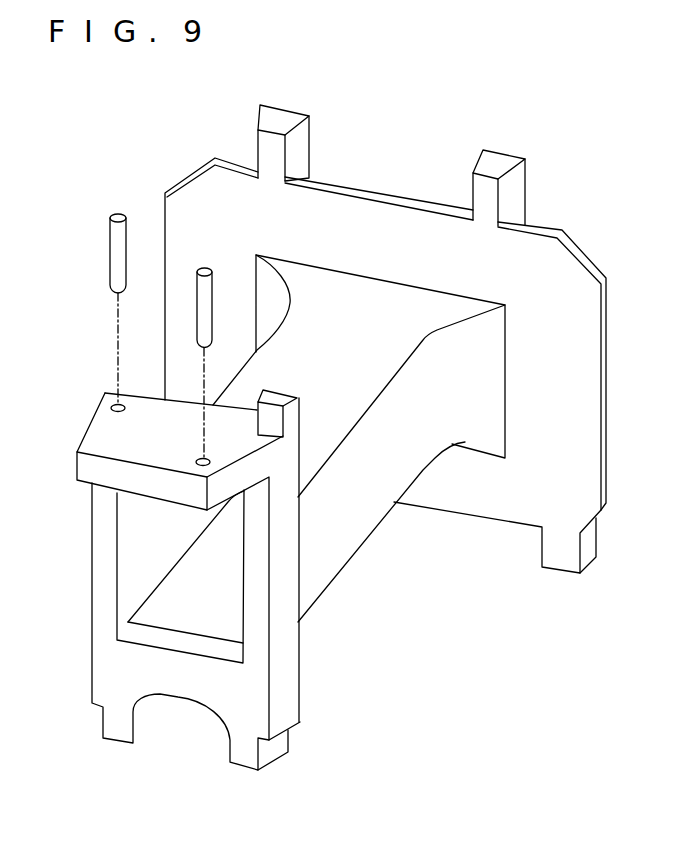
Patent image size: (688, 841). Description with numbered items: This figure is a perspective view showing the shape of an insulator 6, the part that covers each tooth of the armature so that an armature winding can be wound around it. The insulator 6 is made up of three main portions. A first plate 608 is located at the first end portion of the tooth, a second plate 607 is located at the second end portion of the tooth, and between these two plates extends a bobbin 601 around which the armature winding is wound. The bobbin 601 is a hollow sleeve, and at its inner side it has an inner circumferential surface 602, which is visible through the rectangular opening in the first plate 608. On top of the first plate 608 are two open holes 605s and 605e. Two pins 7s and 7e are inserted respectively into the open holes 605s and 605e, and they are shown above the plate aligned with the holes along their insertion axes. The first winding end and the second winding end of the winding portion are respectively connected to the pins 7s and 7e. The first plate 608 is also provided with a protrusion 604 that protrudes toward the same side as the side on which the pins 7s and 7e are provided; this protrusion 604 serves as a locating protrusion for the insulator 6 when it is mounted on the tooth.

The insulator 6 is at (326, 459).
The pin 7s is at (112, 236).
The pin 7e is at (210, 302).
The bobbin 601 is at (347, 520).
The inner circumferential surface 602 is at (215, 622).
The protrusion 604 is at (277, 417).
The open hole 605s is at (112, 404).
The open hole 605e is at (200, 459).
The second plate 607 is at (503, 488).
The first plate 608 is at (299, 672).